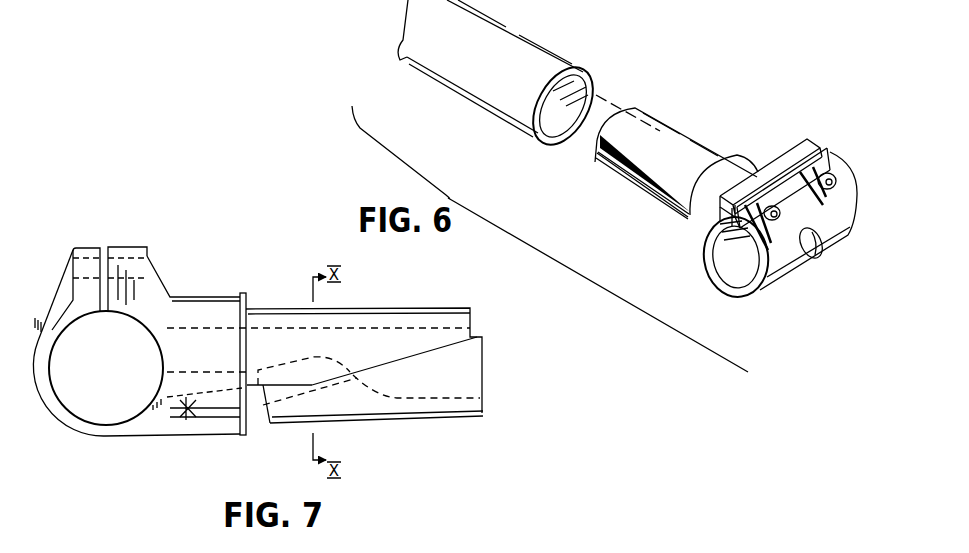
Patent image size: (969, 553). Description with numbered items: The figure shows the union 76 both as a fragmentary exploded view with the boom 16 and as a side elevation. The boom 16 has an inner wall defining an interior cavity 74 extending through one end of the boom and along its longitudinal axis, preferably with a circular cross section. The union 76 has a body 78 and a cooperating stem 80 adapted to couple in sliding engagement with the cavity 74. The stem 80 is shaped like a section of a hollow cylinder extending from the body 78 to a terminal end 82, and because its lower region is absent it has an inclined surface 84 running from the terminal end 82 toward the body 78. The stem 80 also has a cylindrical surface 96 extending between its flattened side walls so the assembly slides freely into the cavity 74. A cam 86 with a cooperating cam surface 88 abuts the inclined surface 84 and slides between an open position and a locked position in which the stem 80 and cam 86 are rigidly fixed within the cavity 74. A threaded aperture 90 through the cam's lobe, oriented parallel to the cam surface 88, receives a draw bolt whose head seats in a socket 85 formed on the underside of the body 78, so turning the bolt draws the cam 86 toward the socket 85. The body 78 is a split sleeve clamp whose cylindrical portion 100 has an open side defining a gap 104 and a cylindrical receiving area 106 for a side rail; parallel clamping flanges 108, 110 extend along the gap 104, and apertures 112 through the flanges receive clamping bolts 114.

In FIG. 6, the central support boom 16 is at (528, 55).
In FIG. 6, the interior cavity 74 is at (572, 89).
In FIG. 6, the union 76 is at (779, 113).
In FIG. 6, the body 78 is at (692, 223).
In FIG. 6, the stem 80 is at (660, 133).
In FIG. 7, the stem 80 is at (435, 303).
In FIG. 6, the terminal end 82 is at (594, 146).
In FIG. 7, the inclined surface 84 is at (403, 360).
In FIG. 7, the socket 85 is at (175, 453).
In FIG. 6, the cam 86 is at (627, 183).
In FIG. 7, the cam 86 is at (478, 415).
In FIG. 7, the cam surface 88 is at (477, 332).
In FIG. 7, the threaded aperture 90 is at (343, 372).
In FIG. 6, the cylindrical surface 96 is at (823, 258).
In FIG. 6, the cylindrical portion 100 is at (787, 278).
In FIG. 7, the cylindrical portion 100 is at (80, 423).
In FIG. 6, the gap 104 is at (740, 272).
In FIG. 7, the gap 104 is at (105, 313).
In FIG. 6, the cylindrical receiving area 106 is at (745, 293).
In FIG. 7, the cylindrical receiving area 106 is at (113, 400).
In FIG. 6, the clamping flange 108 is at (817, 146).
In FIG. 7, the clamping flange 108 is at (130, 250).
In FIG. 6, the clamping flange 110 is at (823, 150).
In FIG. 7, the clamping flange 110 is at (88, 250).
In FIG. 7, the apertures 112 is at (150, 274).
In FIG. 6, the clamping bolts 114 is at (790, 230).